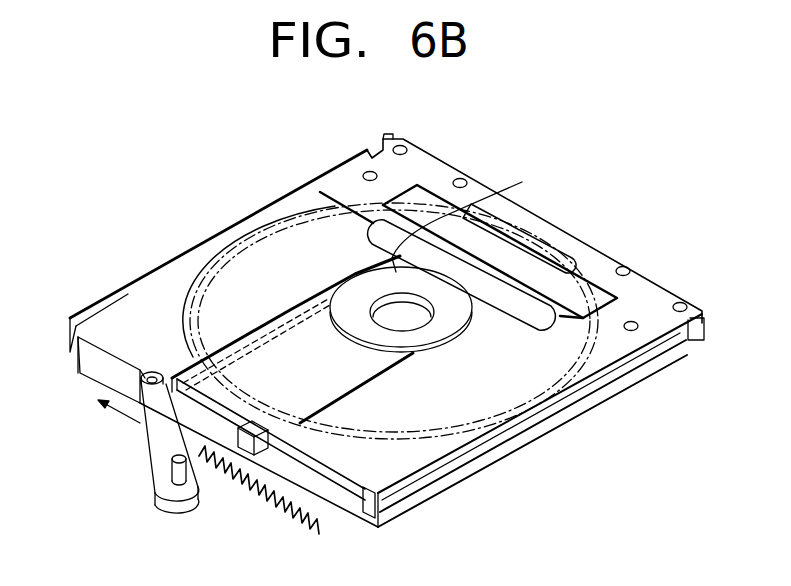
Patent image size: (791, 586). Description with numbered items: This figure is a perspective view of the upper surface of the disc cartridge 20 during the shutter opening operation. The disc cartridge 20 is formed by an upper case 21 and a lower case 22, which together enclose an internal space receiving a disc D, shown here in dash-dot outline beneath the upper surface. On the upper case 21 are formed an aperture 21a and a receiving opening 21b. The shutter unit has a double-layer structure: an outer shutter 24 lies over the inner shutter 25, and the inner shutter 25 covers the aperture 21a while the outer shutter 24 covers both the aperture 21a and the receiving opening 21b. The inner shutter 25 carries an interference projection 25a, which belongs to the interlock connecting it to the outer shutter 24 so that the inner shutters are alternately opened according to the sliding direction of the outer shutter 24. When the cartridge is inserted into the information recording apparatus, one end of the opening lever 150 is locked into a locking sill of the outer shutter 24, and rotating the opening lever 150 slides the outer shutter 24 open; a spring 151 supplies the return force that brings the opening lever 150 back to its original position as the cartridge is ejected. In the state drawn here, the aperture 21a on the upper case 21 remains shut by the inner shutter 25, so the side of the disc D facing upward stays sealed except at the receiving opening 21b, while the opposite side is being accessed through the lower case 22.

The disc cartridge 20 is at (661, 462).
The upper case 21 is at (600, 388).
The aperture 21a is at (260, 328).
The receiving opening 21b is at (466, 212).
The lower case 22 is at (573, 410).
The outer shutter 24 is at (108, 377).
The inner shutter 25 is at (302, 340).
The interference projection 25a is at (302, 492).
The disc D is at (458, 428).
The opening lever 150 is at (160, 464).
The spring 151 is at (248, 495).